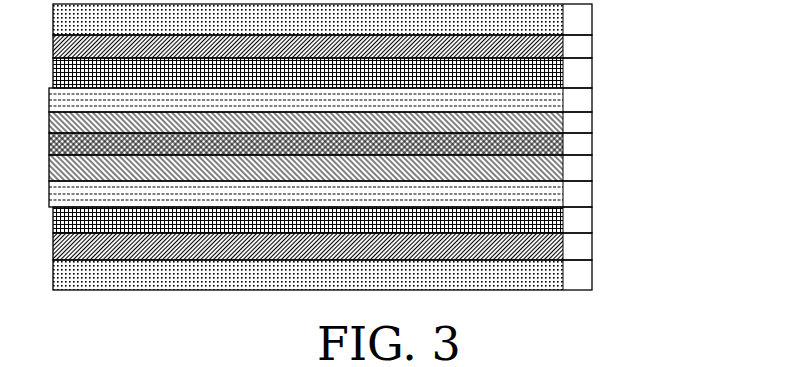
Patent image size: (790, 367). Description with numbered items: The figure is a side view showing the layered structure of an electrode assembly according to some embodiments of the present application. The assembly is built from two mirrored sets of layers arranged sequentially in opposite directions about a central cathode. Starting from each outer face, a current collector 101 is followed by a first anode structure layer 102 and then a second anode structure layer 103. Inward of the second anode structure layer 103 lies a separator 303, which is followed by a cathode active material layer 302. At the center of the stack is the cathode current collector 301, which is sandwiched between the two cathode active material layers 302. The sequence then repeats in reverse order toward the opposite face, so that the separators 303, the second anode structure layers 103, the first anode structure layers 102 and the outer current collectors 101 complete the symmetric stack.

The current collector 101 is at (593, 17).
The first anode structure layer 102 is at (593, 44).
The second anode structure layer 103 is at (593, 70).
The cathode current collector 301 is at (593, 141).
The cathode active material layer 302 is at (593, 120).
The separator 303 is at (593, 97).